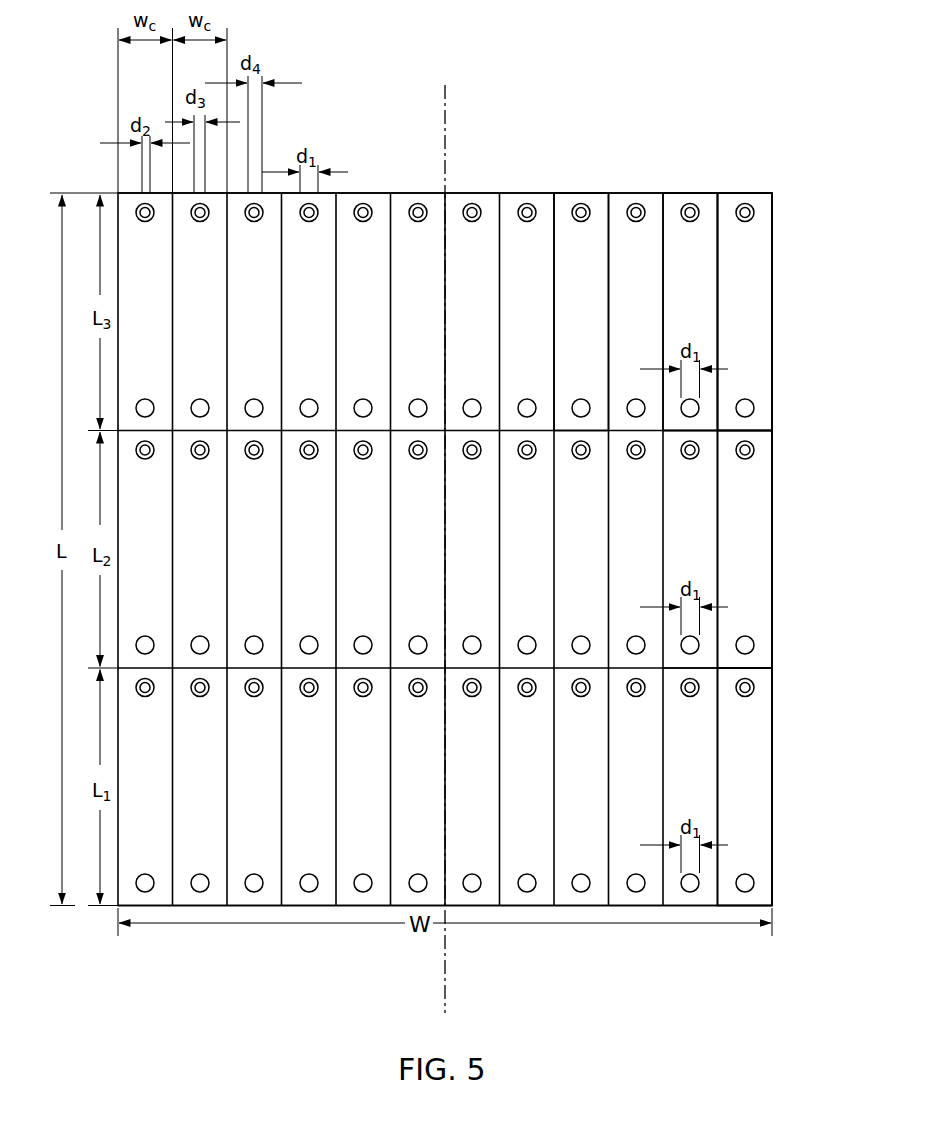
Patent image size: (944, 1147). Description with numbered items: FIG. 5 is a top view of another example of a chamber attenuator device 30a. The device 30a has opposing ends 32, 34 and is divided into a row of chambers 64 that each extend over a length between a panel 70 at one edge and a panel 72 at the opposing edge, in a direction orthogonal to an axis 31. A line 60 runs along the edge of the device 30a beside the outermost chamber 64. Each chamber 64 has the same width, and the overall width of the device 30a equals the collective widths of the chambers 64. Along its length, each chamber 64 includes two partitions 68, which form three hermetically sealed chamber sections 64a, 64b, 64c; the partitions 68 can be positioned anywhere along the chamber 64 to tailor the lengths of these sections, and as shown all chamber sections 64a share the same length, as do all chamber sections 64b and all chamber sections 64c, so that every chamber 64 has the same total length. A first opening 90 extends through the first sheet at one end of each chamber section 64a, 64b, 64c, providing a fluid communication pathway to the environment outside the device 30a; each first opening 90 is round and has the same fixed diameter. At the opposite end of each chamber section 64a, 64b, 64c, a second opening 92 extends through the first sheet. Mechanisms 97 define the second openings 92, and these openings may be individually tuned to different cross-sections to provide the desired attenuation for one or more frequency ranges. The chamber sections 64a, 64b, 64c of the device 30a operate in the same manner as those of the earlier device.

The device 30a is at (161, 958).
The axis 31 is at (445, 975).
The end 32 is at (743, 915).
The end 34 is at (749, 156).
The strip boundary line 60 is at (718, 796).
The chamber 64 is at (573, 255).
The chamber section 64a is at (746, 767).
The chamber section 64b is at (746, 549).
The chamber section 64c is at (746, 282).
The partition 68 is at (672, 432).
The panel 70 is at (686, 908).
The panel 72 is at (373, 193).
The first opening 90 is at (757, 408).
The second opening 92 is at (138, 204).
The mechanism 97 is at (463, 431).